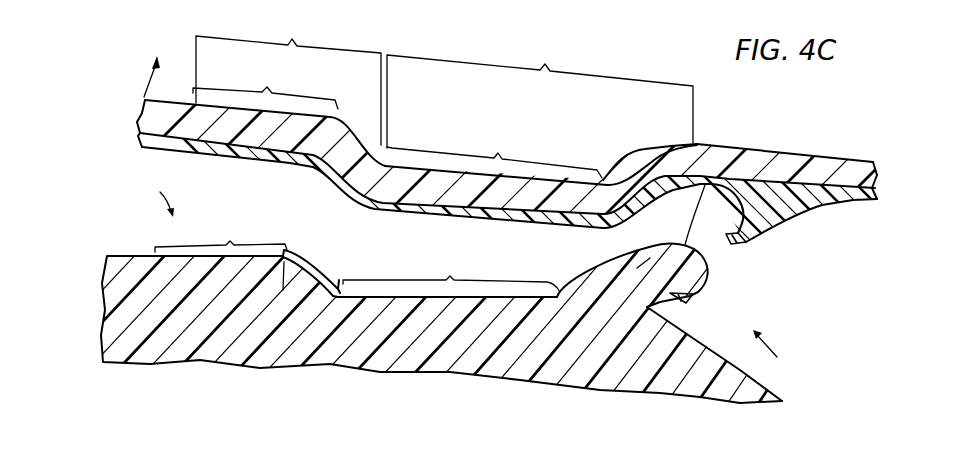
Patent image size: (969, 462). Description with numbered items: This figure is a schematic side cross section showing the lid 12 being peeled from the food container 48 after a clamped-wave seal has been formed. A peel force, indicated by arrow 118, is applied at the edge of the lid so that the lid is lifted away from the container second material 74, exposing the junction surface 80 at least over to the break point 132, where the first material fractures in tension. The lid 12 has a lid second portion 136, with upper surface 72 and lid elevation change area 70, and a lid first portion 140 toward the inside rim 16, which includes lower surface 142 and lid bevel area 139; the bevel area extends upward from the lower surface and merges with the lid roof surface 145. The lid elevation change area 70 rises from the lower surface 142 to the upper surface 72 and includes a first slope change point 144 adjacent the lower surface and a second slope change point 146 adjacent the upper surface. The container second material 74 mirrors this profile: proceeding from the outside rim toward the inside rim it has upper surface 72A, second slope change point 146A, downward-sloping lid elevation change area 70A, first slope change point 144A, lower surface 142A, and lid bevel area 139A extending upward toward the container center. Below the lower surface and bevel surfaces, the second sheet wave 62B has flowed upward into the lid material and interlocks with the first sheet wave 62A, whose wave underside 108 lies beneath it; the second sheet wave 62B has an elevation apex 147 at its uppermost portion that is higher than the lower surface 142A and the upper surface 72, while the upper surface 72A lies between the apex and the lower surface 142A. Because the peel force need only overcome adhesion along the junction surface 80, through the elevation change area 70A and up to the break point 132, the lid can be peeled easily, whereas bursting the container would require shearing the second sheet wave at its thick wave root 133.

The lid 12 is at (732, 182).
The inside rim 16 is at (776, 351).
The food container 48 is at (781, 398).
The first sheet wave 62A is at (785, 224).
The second sheet wave 62B is at (656, 245).
The lid elevation change area 70 is at (338, 117).
The lid elevation change area 70A is at (292, 260).
The upper surface 72 is at (265, 88).
The upper surface 72A is at (221, 237).
The second material 74 is at (133, 268).
The junction surface 80 is at (153, 200).
The wave underside 108 is at (748, 239).
The peel force arrow 118 is at (146, 81).
The break point 132 is at (697, 296).
The wave root 133 is at (637, 268).
The lid second portion 136 is at (288, 80).
The lid bevel area 139 is at (650, 152).
The lid bevel area 139A is at (605, 269).
The lid first portion 140 is at (540, 96).
The lower surface 142 is at (494, 154).
The lower surface 142A is at (451, 273).
The first slope change point 144 is at (372, 186).
The first slope change point 144A is at (339, 276).
The lid roof surface 145 is at (834, 159).
The second slope change point 146 is at (337, 119).
The second slope change point 146A is at (283, 290).
The elevation apex 147 is at (705, 185).